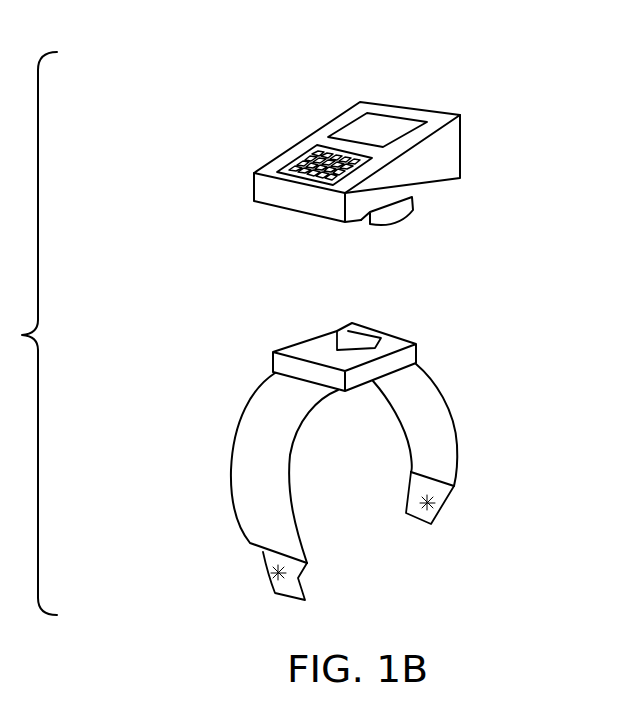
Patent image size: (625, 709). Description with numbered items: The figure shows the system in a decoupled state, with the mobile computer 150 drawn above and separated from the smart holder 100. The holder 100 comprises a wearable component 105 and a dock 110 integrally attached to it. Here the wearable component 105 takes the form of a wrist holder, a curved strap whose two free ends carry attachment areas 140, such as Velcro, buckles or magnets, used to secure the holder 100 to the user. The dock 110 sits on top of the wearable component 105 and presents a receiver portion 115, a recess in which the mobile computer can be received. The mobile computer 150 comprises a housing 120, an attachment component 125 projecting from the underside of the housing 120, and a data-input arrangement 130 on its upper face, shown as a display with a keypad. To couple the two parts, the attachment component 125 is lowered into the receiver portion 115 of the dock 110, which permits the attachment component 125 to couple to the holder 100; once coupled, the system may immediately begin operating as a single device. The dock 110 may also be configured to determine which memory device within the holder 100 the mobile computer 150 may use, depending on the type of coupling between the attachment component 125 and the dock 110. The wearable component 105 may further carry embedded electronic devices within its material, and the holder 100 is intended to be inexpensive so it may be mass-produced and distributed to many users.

The smart holder 100 is at (192, 428).
The wearable component 105 is at (453, 400).
The dock 110 is at (407, 335).
The receiver portion 115 is at (332, 348).
The housing 120 is at (427, 165).
The attachment component 125 is at (415, 200).
The data-input arrangement 130 is at (340, 156).
The attachment areas 140 is at (298, 578).
The mobile computer 150 is at (278, 139).